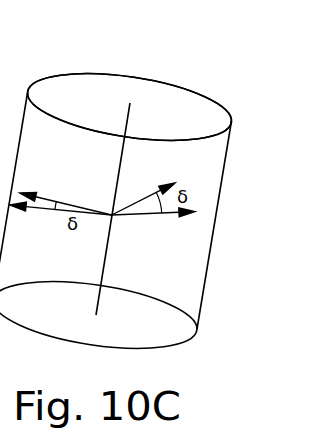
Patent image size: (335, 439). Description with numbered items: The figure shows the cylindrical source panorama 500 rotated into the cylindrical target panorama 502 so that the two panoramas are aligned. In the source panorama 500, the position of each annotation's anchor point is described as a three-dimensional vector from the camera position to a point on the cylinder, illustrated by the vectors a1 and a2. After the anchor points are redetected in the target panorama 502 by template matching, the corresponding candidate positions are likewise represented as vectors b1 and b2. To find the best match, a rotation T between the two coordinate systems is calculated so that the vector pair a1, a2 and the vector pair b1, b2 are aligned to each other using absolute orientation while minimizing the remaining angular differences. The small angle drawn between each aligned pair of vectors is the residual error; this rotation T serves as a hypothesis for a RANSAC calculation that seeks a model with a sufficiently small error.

The cylindrical source panorama 500 is at (97, 73).
The cylindrical target panorama 502 is at (190, 88).
The 3D vector a1 is at (50, 219).
The 3D vector b1 is at (56, 156).
The 3D vector a2 is at (171, 219).
The 3D vector b2 is at (148, 156).